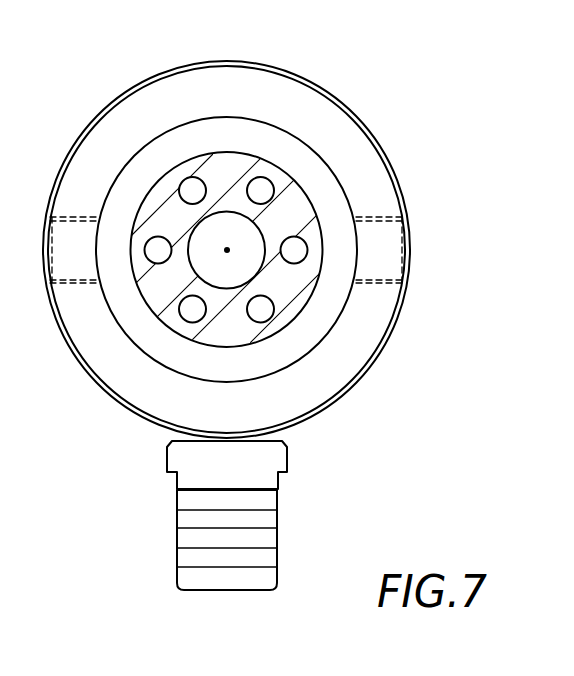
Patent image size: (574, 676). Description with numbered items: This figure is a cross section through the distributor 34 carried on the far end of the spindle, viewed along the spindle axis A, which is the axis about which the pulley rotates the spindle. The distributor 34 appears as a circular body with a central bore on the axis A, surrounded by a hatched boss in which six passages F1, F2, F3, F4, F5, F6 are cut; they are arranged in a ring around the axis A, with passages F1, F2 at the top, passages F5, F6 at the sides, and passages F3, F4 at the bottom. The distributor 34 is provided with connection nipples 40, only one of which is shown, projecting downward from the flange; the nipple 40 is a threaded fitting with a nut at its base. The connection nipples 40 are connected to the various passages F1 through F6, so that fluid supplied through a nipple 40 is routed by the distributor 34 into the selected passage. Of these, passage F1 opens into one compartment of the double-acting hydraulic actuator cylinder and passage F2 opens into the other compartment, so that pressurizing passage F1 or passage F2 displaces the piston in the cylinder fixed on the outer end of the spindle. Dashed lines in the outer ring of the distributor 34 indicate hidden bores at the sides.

The distributor 34 is at (380, 317).
The connection nipple 40 is at (265, 518).
The axis A is at (227, 250).
The passage F1 is at (192, 185).
The passage F2 is at (260, 185).
The passage F3 is at (192, 309).
The passage F4 is at (262, 310).
The passage F5 is at (157, 248).
The passage F6 is at (294, 250).